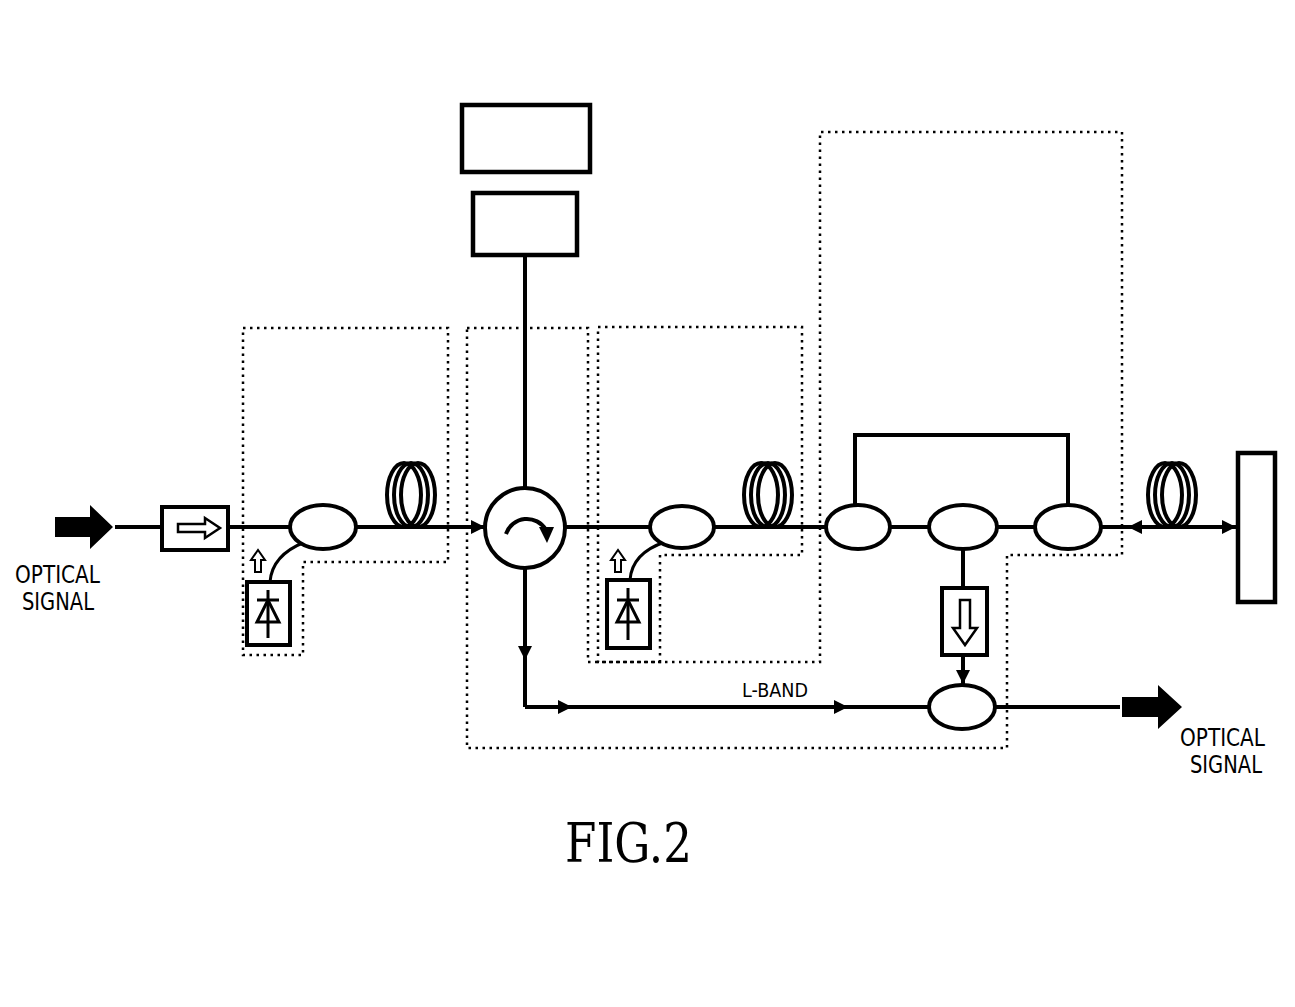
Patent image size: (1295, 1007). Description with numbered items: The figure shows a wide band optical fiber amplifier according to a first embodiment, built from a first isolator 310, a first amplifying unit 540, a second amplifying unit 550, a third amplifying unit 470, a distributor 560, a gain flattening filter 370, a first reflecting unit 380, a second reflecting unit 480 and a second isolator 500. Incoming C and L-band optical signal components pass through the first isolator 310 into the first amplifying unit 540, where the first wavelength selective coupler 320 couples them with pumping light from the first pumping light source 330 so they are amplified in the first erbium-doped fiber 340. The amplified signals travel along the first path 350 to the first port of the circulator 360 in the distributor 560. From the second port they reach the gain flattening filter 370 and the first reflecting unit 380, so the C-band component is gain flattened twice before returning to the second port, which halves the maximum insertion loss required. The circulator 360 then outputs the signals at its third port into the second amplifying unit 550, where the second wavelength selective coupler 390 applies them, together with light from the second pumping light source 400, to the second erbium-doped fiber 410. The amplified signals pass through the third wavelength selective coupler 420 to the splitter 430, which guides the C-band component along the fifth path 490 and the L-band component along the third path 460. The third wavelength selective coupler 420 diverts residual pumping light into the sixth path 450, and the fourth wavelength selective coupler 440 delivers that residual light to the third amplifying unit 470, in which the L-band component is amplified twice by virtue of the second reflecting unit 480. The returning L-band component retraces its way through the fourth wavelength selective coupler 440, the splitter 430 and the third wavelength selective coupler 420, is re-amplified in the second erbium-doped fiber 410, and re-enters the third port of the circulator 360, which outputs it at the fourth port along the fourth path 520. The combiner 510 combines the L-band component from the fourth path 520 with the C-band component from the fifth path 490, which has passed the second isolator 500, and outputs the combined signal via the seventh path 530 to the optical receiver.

The first isolator 310 is at (187, 506).
The first wavelength selective coupler 320 is at (318, 506).
The first pumping light source 330 is at (290, 632).
The first erbium-doped fiber 340 is at (400, 462).
The first path 350 is at (463, 540).
The circulator 360 is at (508, 568).
The gain flattening filter 370 is at (577, 222).
The first reflecting unit 380 is at (590, 135).
The second wavelength selective coupler 390 is at (662, 508).
The second pumping light source 400 is at (650, 625).
The second erbium-doped fiber 410 is at (762, 462).
The third wavelength selective coupler 420 is at (846, 548).
The splitter 430 is at (940, 548).
The fourth wavelength selective coupler 440 is at (1100, 548).
The sixth path 450 is at (945, 434).
The third path 460 is at (1203, 530).
The third amplifying unit 470 is at (1156, 463).
The second reflecting unit 480 is at (1256, 453).
The fifth path 490 is at (968, 556).
The second isolator 500 is at (942, 632).
The combiner 510 is at (990, 690).
The fourth path 520 is at (523, 687).
The seventh path 530 is at (1078, 705).
The first amplifying unit 540 is at (268, 328).
The second amplifying unit 550 is at (708, 327).
The distributor 560 is at (1085, 132).